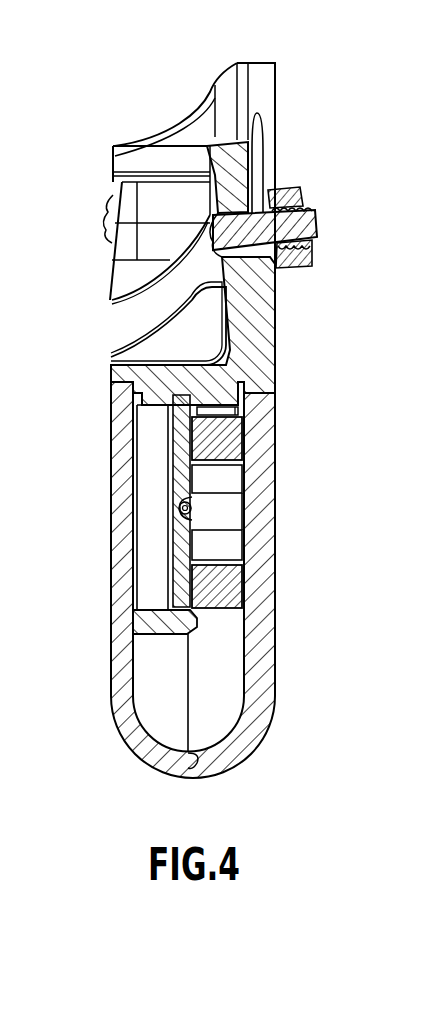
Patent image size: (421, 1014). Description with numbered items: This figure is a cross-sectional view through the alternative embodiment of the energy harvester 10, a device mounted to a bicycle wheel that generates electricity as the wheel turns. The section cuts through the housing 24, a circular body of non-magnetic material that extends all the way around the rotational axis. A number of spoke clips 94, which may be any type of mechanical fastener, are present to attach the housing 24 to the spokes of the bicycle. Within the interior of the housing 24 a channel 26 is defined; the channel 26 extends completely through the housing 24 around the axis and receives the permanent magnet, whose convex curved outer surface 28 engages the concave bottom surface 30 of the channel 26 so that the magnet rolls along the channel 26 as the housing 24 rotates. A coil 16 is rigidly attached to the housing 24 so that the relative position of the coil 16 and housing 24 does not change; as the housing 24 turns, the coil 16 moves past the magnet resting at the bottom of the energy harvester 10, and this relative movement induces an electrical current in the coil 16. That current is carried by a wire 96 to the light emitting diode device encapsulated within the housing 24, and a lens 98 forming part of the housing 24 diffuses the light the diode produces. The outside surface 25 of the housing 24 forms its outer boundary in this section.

The energy harvester 10 is at (101, 76).
The spoke clips 94 is at (297, 188).
The housing 24 is at (274, 324).
The outside surface 25 is at (286, 394).
The concave bottom surface 30 is at (155, 588).
The coil 16 is at (223, 443).
The wire 96 is at (190, 513).
The channel 26 is at (131, 577).
The lens 98 is at (244, 737).
The curved outer surface 28 is at (408, 622).